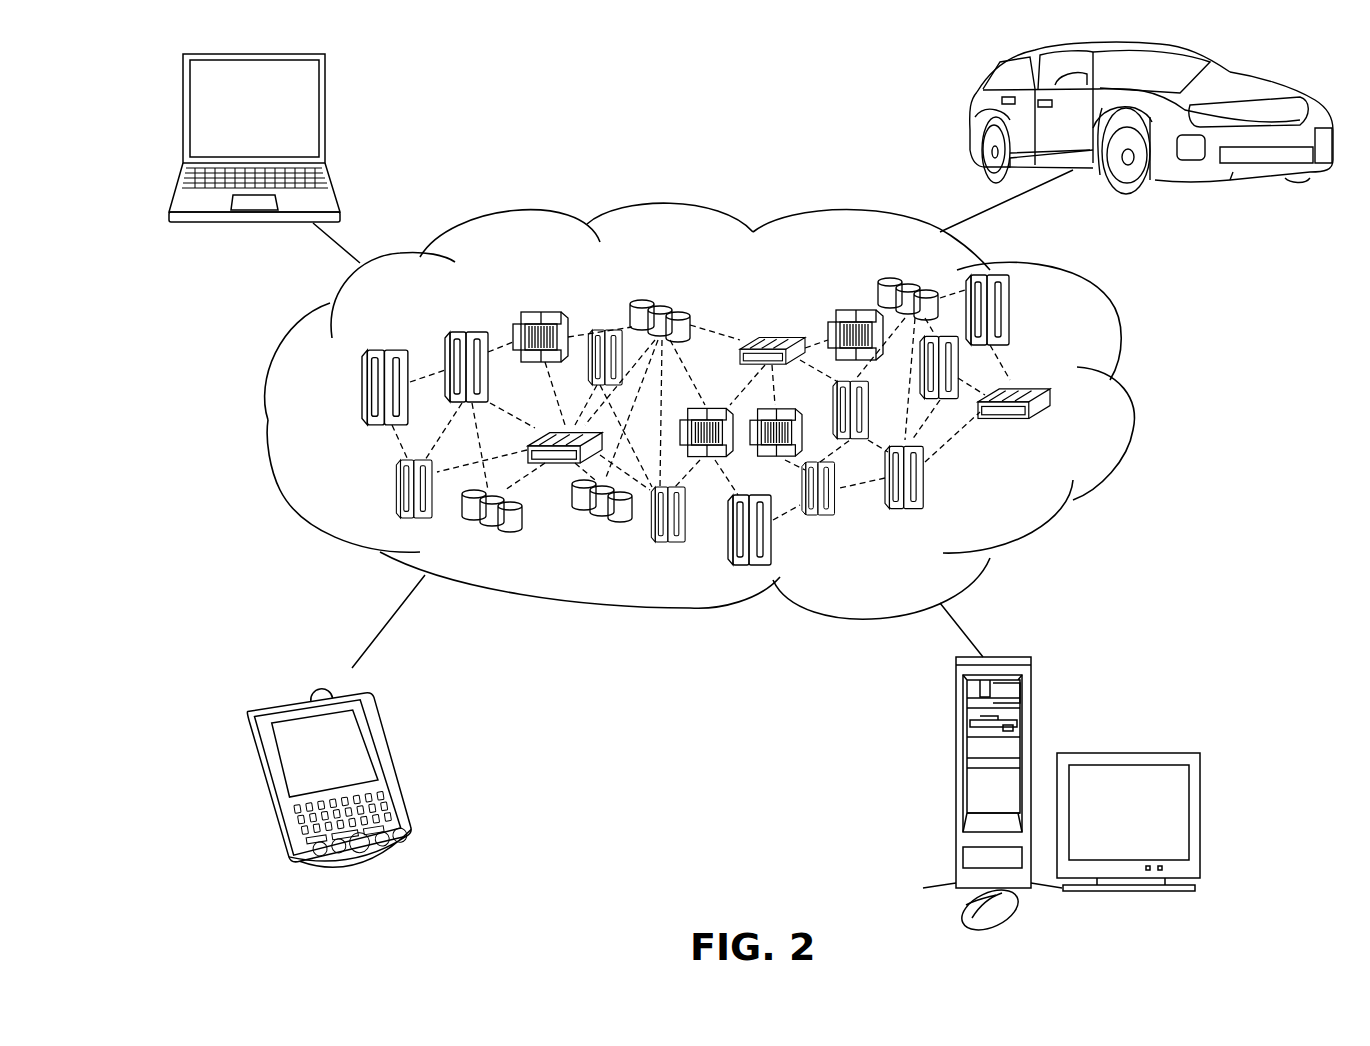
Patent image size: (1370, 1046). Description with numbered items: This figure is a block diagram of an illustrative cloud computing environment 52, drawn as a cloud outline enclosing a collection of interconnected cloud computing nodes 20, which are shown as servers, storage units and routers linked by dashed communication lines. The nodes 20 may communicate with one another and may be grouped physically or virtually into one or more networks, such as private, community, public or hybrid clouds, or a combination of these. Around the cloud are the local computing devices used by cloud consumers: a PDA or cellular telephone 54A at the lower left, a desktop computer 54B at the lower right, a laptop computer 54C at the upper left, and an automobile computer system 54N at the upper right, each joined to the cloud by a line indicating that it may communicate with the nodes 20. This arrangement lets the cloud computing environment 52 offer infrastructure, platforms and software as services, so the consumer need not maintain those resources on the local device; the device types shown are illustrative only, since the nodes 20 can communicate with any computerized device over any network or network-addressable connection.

The cloud computing environment 52 is at (1123, 398).
The cloud computing node 20 is at (1031, 503).
The PDA or cellular telephone 54A is at (380, 733).
The desktop computer 54B is at (952, 718).
The laptop computer 54C is at (325, 92).
The automobile computer system 54N is at (968, 110).